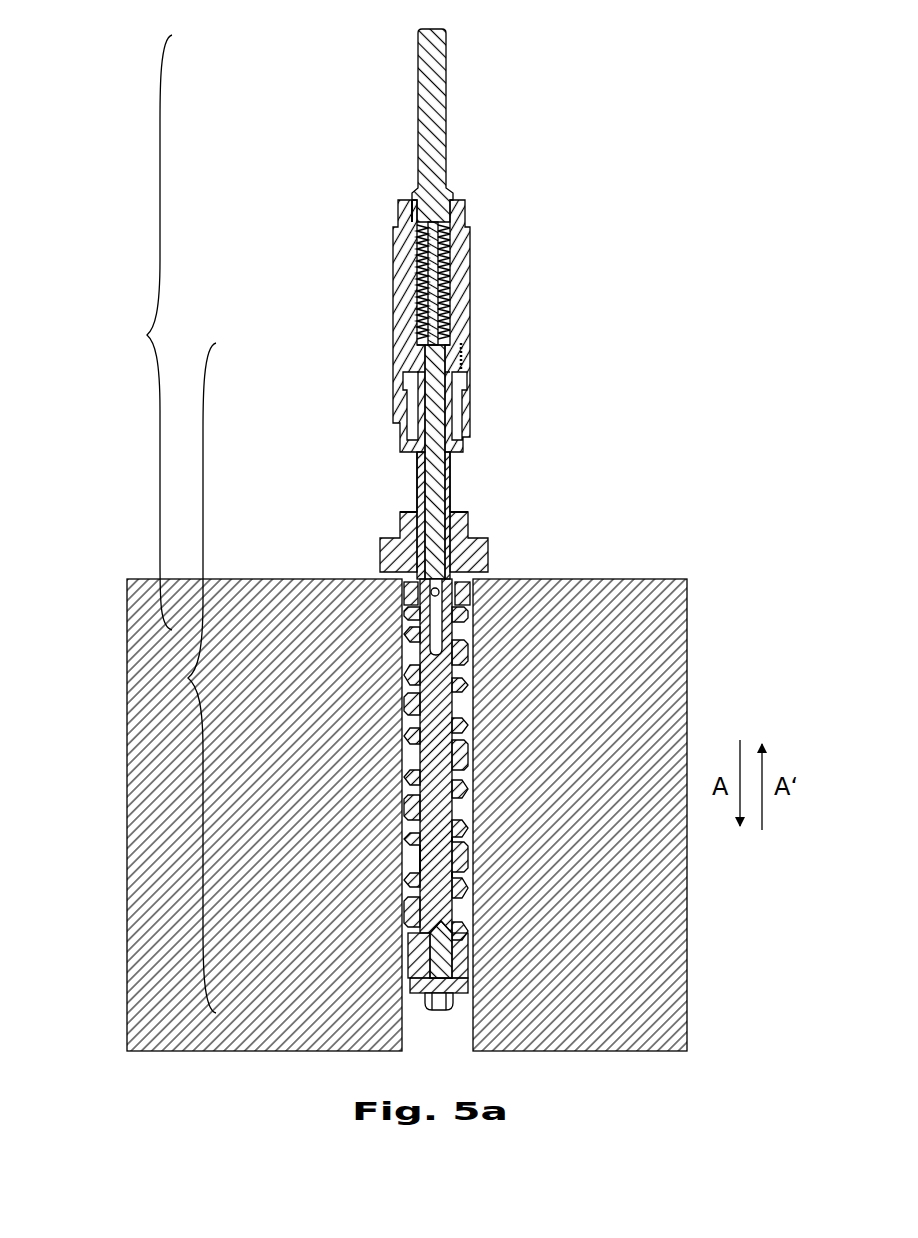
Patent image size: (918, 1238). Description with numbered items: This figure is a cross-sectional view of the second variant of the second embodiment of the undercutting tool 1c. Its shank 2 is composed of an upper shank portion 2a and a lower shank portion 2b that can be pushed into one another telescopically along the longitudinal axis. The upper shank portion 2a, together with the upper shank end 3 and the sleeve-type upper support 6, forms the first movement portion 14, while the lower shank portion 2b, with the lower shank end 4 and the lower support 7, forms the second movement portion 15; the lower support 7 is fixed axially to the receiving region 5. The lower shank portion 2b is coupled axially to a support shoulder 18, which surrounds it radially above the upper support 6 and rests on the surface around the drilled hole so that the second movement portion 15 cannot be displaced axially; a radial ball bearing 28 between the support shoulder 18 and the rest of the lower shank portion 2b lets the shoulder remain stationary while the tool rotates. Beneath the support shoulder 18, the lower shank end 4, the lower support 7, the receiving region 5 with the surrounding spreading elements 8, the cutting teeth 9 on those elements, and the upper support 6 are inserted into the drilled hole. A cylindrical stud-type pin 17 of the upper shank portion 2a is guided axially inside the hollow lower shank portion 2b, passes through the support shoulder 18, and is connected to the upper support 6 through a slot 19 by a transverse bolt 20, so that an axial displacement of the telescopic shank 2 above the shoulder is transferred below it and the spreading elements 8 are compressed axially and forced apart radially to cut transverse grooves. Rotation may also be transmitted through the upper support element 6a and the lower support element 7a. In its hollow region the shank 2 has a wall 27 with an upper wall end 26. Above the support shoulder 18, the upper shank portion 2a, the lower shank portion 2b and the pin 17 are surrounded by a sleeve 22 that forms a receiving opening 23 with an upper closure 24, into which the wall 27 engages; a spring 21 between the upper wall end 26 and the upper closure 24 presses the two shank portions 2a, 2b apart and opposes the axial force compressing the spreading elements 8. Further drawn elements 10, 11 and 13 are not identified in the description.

The undercutting tool 1c is at (133, 68).
The shank 2 is at (320, 326).
The upper shank portion 2a is at (127, 211).
The lower shank portion 2b is at (176, 835).
The upper shank end 3 is at (392, 60).
The lower shank end 4 is at (402, 955).
The receiving region 5 is at (440, 752).
The upper support 6 is at (466, 593).
The upper support element 6a is at (410, 614).
The lower support 7 is at (466, 965).
The lower support element 7a is at (468, 950).
The spreading elements 8 is at (410, 770).
The cutting teeth 9 is at (410, 888).
The projection 10 is at (468, 840).
The recess 11 is at (468, 873).
The end cap 13 is at (448, 1000).
The first movement portion 14 is at (133, 332).
The second movement portion 15 is at (183, 678).
The pin 17 is at (447, 272).
The support shoulder 18 is at (488, 556).
The slot 19 is at (420, 657).
The transverse bolt 20 is at (416, 593).
The spring 21 is at (432, 270).
The sleeve 22 is at (450, 243).
The receiving opening 23 is at (417, 250).
The upper closure 24 is at (420, 217).
The upper wall end 26 is at (462, 343).
The wall 27 is at (426, 458).
The radial ball bearing 28 is at (416, 532).